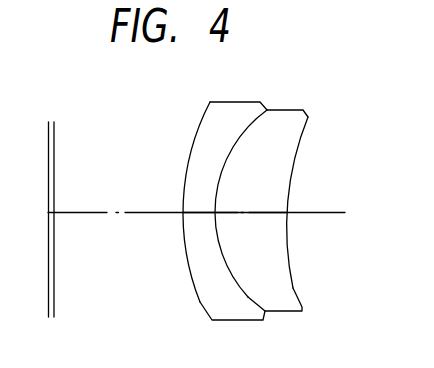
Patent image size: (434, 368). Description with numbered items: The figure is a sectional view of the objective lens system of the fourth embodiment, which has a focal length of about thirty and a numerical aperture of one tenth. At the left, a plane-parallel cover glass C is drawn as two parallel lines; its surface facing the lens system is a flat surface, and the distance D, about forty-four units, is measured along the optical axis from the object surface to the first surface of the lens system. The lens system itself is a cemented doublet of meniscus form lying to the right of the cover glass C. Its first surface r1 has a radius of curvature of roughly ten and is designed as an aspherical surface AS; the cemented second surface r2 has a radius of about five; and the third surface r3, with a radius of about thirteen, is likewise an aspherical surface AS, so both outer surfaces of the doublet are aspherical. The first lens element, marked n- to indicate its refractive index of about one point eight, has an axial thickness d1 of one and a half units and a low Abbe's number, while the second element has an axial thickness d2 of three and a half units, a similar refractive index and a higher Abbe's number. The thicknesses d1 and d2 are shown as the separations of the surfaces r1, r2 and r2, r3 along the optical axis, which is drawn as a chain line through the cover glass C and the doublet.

The cover glass C is at (51, 204).
The distance from object surface to first lens surface D is at (125, 214).
The aspherical surface AS is at (260, 218).
The negative lens element (lower refractive index) n- is at (223, 227).
The first lens surface r1 is at (197, 302).
The second lens surface r2 is at (245, 297).
The third lens surface r3 is at (293, 278).
The thickness of first lens element d1 is at (195, 209).
The thickness of second lens element d2 is at (262, 210).